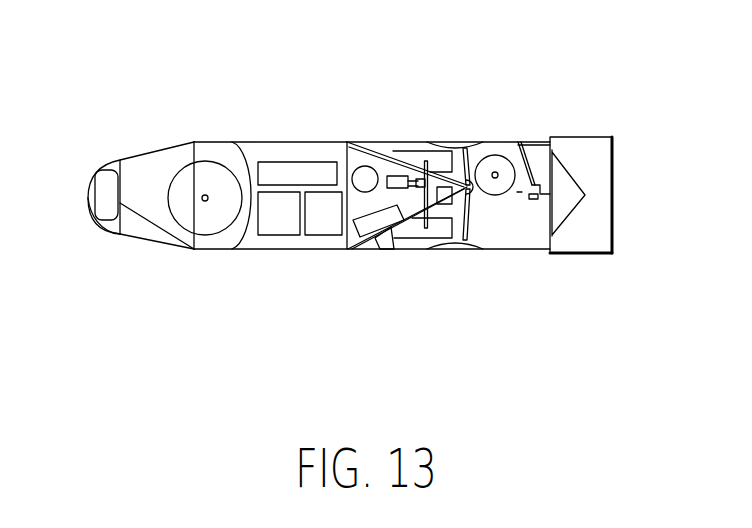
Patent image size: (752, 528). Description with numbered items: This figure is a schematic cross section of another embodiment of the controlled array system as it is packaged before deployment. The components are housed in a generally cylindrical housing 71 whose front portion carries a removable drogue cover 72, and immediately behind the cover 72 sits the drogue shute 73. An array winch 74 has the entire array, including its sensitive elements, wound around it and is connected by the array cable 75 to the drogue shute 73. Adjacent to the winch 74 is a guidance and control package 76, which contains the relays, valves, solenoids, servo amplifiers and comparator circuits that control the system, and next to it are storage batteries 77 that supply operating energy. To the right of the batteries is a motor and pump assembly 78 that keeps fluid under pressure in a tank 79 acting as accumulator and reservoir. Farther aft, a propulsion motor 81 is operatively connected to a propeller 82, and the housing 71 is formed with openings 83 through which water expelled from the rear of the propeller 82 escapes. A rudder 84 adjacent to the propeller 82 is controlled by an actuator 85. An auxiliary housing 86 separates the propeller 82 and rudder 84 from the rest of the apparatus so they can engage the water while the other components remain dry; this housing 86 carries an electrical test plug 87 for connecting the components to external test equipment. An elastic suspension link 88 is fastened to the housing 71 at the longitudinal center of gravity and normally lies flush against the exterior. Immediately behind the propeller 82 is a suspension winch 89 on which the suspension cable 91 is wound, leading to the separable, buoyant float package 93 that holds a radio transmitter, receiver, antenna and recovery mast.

The housing 71 is at (257, 142).
The drogue cover 72 is at (100, 170).
The drogue shute 73 is at (103, 212).
The array winch 74 is at (198, 215).
The array cable 75 is at (157, 212).
The guidance and control package 76 is at (312, 170).
The storage batteries 77 is at (283, 222).
The motor and pump assembly 78 is at (386, 221).
The tank 79 is at (356, 170).
The propulsion motor 81 is at (448, 195).
The propeller 82 is at (486, 200).
The openings 83 is at (462, 148).
The rudder 84 is at (417, 152).
The actuator 85 is at (392, 188).
The auxiliary housing 86 is at (388, 239).
The electrical test plug 87 is at (372, 152).
The elastic suspension link 88 is at (390, 154).
The suspension winch 89 is at (502, 165).
The suspension cable 91 is at (528, 195).
The float package 93 is at (587, 137).